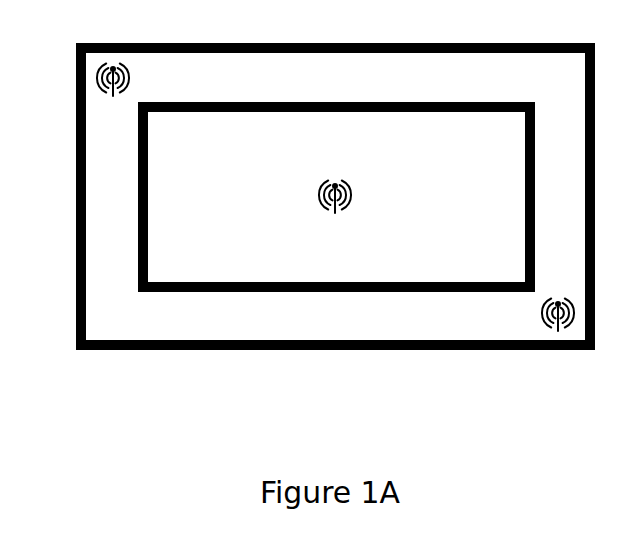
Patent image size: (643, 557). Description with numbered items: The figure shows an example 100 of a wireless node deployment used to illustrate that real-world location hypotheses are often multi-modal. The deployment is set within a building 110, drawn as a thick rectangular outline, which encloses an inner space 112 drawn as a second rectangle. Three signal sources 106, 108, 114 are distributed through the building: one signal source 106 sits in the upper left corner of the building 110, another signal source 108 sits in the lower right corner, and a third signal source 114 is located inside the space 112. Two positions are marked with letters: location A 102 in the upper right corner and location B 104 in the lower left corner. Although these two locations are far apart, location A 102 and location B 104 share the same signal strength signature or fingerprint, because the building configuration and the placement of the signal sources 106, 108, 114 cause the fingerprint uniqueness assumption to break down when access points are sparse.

The example of wireless node deployment 100 is at (335, 202).
The location A 102 is at (562, 90).
The location B 104 is at (134, 313).
The signal source 106 is at (138, 80).
The signal source 108 is at (562, 299).
The building 110 is at (335, 175).
The space 112 is at (336, 197).
The signal source 114 is at (363, 194).